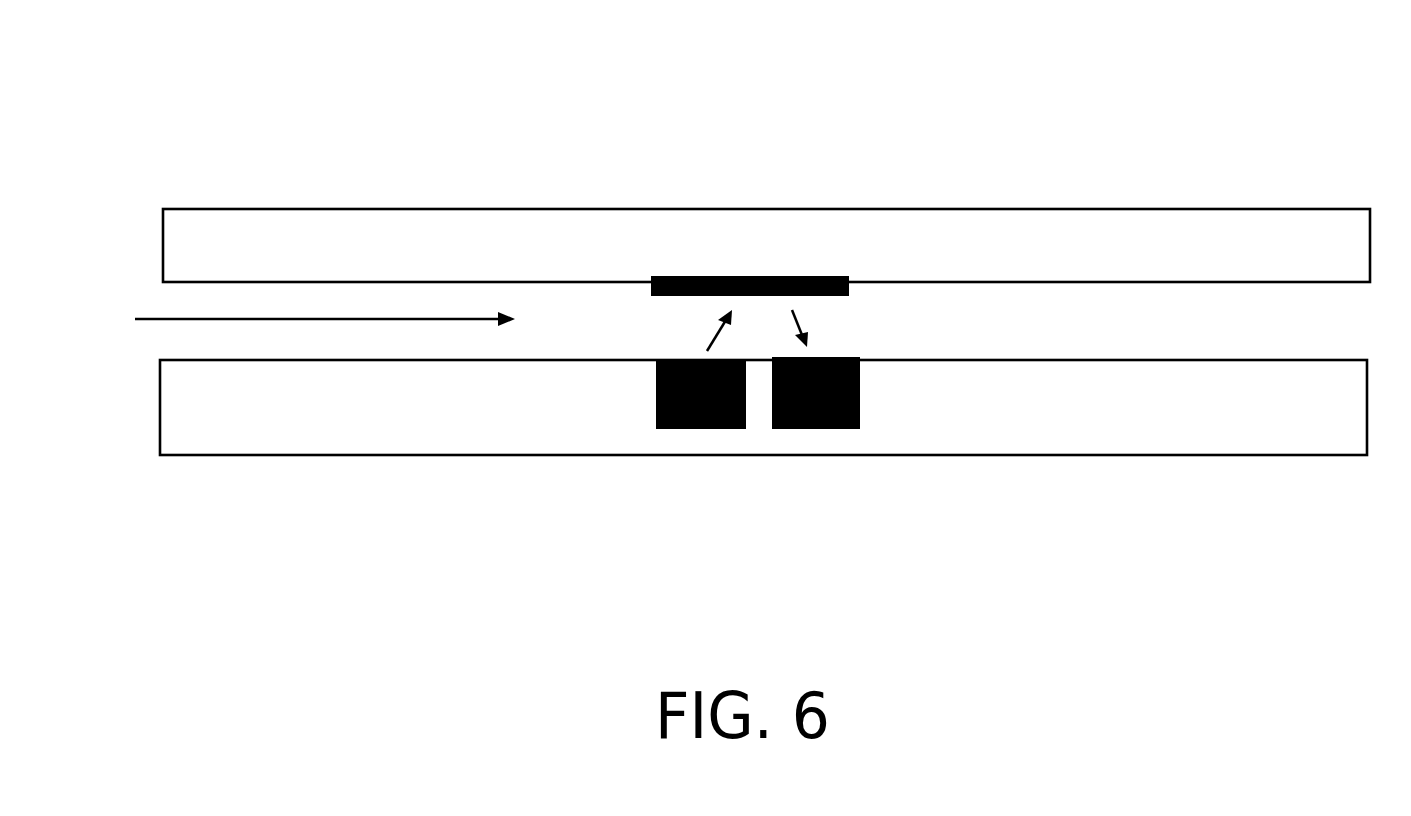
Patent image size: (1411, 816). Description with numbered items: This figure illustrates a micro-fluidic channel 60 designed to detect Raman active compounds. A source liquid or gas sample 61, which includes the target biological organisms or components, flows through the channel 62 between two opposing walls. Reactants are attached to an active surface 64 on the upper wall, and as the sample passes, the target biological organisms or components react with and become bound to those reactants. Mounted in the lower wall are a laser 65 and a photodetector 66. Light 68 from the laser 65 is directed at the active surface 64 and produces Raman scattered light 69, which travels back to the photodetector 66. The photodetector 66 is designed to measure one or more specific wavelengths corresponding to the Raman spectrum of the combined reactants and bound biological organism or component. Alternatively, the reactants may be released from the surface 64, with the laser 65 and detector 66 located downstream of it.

The micro-fluidic channel 60 is at (1075, 150).
The source liquid sample 61 is at (293, 320).
The channel 62 is at (1050, 332).
The active surface 64 is at (737, 278).
The laser 65 is at (691, 428).
The photodetector 66 is at (815, 428).
The light 68 is at (717, 333).
The Raman scattered light 69 is at (797, 322).